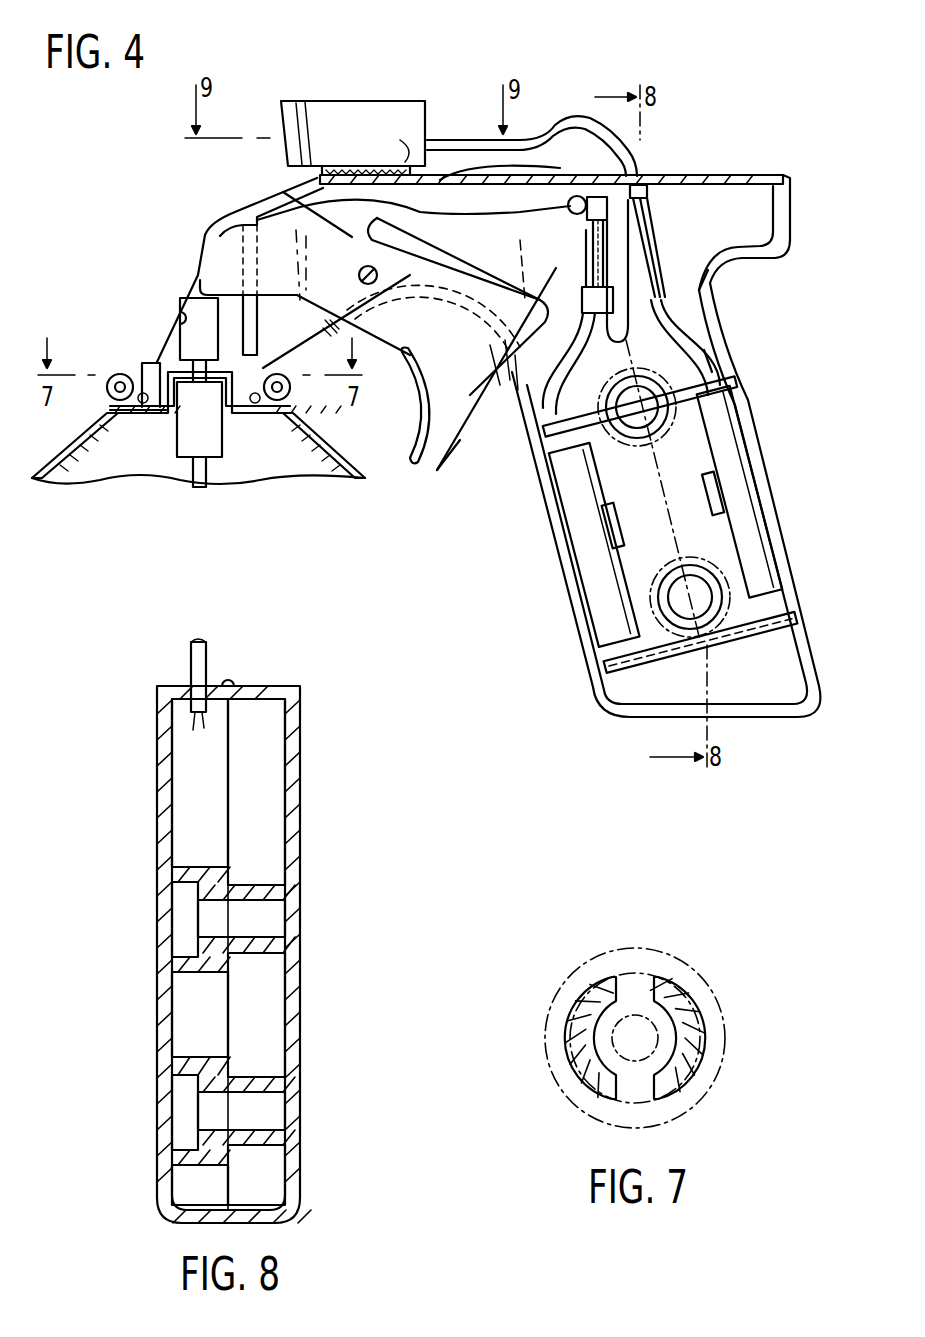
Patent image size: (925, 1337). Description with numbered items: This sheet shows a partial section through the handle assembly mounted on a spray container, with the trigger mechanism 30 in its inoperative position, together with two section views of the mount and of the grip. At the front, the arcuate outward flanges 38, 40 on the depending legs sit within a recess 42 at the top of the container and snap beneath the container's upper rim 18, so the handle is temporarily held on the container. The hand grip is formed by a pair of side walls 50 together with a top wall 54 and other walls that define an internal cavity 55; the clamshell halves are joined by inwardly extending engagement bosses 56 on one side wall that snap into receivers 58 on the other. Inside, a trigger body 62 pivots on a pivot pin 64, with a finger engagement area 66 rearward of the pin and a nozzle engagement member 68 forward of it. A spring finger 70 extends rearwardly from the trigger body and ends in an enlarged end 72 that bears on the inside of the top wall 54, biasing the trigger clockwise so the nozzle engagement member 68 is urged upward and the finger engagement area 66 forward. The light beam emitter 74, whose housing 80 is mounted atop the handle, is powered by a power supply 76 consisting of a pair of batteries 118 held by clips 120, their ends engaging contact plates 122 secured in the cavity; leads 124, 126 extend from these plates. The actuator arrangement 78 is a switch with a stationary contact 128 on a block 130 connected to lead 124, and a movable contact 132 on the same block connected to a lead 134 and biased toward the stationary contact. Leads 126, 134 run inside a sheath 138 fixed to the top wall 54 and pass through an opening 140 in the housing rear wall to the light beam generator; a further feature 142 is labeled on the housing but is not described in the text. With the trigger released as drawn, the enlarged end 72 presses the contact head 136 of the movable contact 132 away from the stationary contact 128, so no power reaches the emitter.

In FIG. 4, the upper rim 18 is at (123, 368).
In FIG. 7, the upper rim 18 is at (672, 962).
In FIG. 4, the trigger mechanism 30 is at (442, 470).
In FIG. 4, the front flange 38 is at (135, 410).
In FIG. 7, the front flange 38 is at (585, 1058).
In FIG. 4, the rear flange 40 is at (272, 408).
In FIG. 7, the rear flange 40 is at (687, 1030).
In FIG. 4, the recess 42 is at (160, 430).
In FIG. 8, the side walls 50 is at (159, 818).
In FIG. 4, the top wall 54 is at (733, 175).
In FIG. 8, the top wall 54 is at (262, 686).
In FIG. 4, the internal cavity 55 is at (695, 330).
In FIG. 8, the engagement bosses 56 is at (285, 978).
In FIG. 8, the receivers 58 is at (172, 985).
In FIG. 4, the trigger body 62 is at (283, 192).
In FIG. 4, the pivot pin 64 is at (392, 272).
In FIG. 4, the finger engagement area 66 is at (408, 432).
In FIG. 4, the nozzle engagement member 68 is at (220, 270).
In FIG. 4, the spring finger 70 is at (470, 184).
In FIG. 4, the enlarged end 72 is at (568, 198).
In FIG. 4, the light beam emitter 74 is at (330, 92).
In FIG. 4, the power supply 76 is at (711, 355).
In FIG. 4, the actuator arrangement 78 is at (520, 243).
In FIG. 4, the housing 80 is at (373, 108).
In FIG. 4, the batteries 118 is at (760, 550).
In FIG. 4, the clips 120 is at (715, 492).
In FIG. 4, the contact plates 122 is at (725, 376).
In FIG. 4, the lead 124 is at (545, 428).
In FIG. 4, the lead 126 is at (720, 295).
In FIG. 4, the stationary contact 128 is at (574, 271).
In FIG. 4, the block 130 is at (515, 357).
In FIG. 4, the movable contact 132 is at (612, 250).
In FIG. 4, the lead 134 is at (760, 260).
In FIG. 4, the contact head 136 is at (640, 165).
In FIG. 4, the sheath 138 is at (571, 118).
In FIG. 8, the sheath 138 is at (207, 657).
In FIG. 4, the opening 140 is at (322, 171).
In FIG. 4, the switch button cap 142 is at (356, 133).